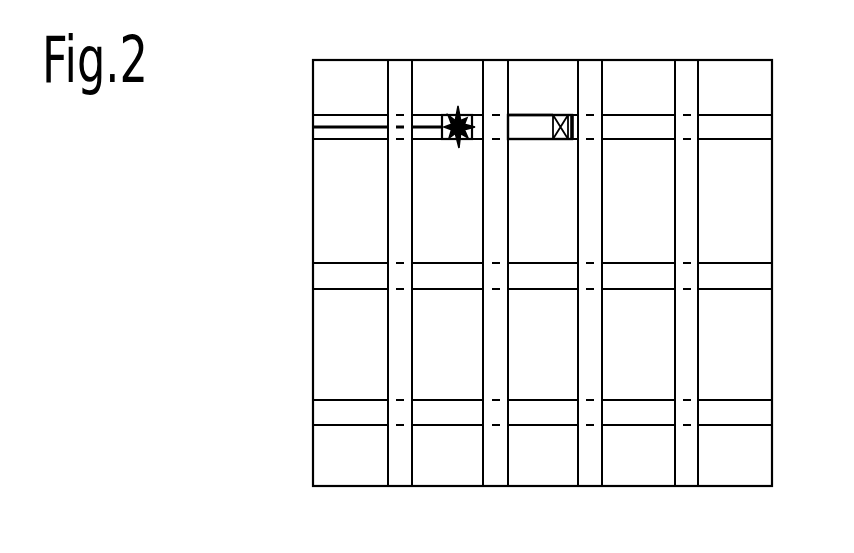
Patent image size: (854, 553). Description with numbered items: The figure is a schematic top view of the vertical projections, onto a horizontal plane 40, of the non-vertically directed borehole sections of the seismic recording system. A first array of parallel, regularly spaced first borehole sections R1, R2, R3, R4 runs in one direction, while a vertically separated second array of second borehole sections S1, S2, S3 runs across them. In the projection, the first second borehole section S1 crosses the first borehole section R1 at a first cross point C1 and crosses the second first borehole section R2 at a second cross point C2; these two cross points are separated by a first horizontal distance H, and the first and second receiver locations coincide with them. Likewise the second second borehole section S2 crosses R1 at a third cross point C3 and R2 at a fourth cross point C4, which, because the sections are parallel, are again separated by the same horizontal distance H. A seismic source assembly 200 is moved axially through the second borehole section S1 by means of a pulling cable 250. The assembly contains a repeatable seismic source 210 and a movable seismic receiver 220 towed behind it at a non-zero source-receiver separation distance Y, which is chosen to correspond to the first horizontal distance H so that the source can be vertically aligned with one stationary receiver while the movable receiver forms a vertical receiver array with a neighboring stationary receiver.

The horizontal plane 40 is at (305, 197).
The seismic source assembly 200 is at (523, 113).
The repeatable seismic source 210 is at (452, 107).
The movable seismic receiver 220 is at (557, 113).
The pulling cable 250 is at (375, 128).
The first non-vertically directed first borehole section R1 is at (685, 70).
The second non-vertically directed first borehole section R2 is at (592, 72).
The third non-vertically directed first borehole section R3 is at (493, 70).
The fourth non-vertically directed first borehole section R4 is at (398, 73).
The first cross point C1 is at (685, 128).
The second cross point C2 is at (593, 130).
The third cross point C3 is at (687, 277).
The fourth cross point C4 is at (590, 277).
The first non-vertically directed second borehole section S1 is at (318, 109).
The second non-vertically directed second borehole section S2 is at (343, 290).
The third non-vertically directed second borehole section S3 is at (338, 425).
The first horizontal distance H is at (685, 90).
The source-receiver separation distance Y is at (456, 148).